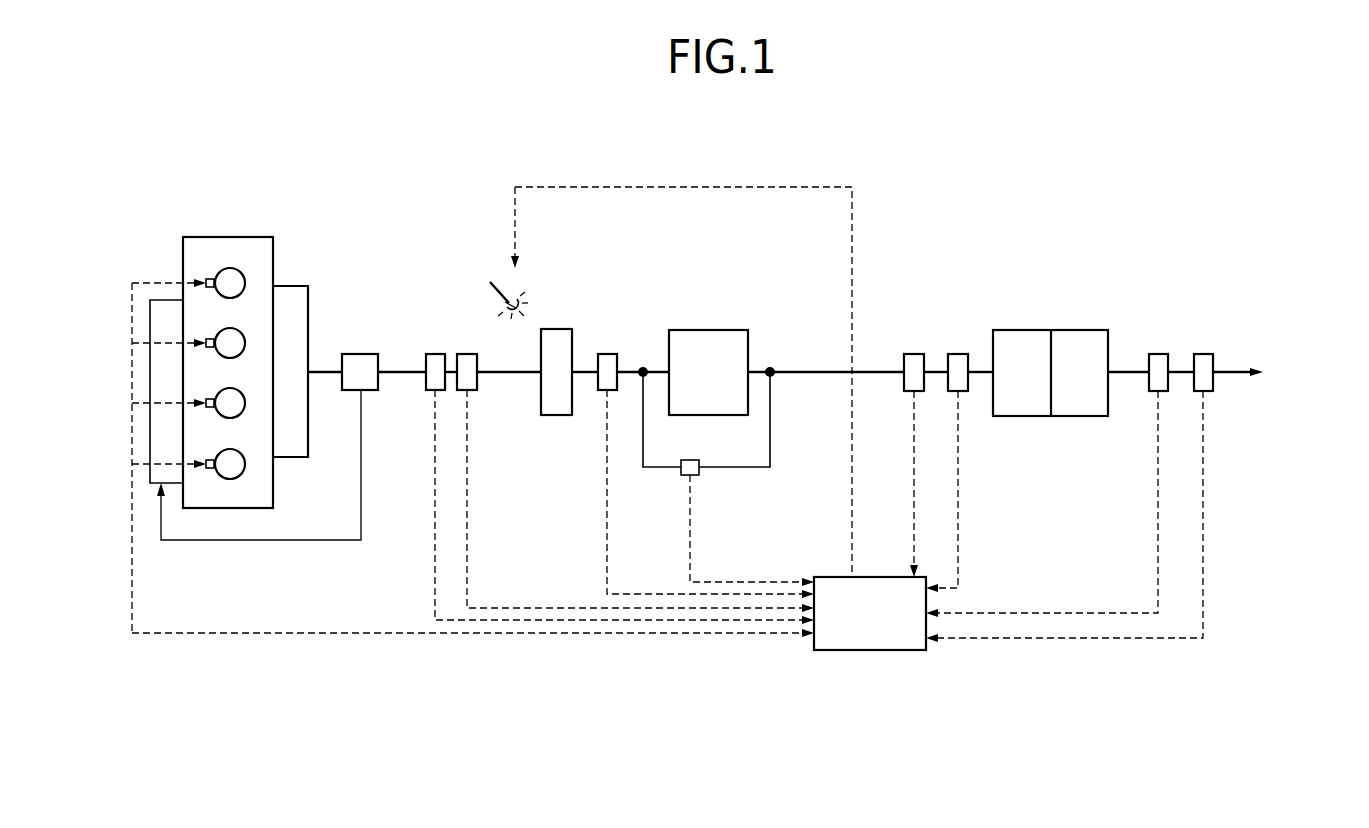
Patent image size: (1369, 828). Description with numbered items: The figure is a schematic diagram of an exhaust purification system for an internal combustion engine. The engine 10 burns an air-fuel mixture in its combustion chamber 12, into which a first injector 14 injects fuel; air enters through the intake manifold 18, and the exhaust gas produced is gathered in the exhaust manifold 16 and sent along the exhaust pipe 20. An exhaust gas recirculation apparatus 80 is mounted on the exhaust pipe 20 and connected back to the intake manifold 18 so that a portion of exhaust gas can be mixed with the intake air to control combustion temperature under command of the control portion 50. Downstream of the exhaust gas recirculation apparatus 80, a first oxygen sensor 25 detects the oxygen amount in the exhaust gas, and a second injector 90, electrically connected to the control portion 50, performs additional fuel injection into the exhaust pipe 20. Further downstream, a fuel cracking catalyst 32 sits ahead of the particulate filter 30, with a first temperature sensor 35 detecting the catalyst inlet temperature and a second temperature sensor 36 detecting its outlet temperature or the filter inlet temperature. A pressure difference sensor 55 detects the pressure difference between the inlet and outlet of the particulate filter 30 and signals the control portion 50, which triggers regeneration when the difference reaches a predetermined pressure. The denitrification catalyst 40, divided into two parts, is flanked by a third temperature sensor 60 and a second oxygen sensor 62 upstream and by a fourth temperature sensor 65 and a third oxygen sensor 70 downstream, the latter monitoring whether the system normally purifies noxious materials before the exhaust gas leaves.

The engine 10 is at (290, 205).
The combustion chamber 12 is at (235, 268).
The first injector 14 is at (208, 277).
The exhaust manifold 16 is at (298, 296).
The intake manifold 18 is at (149, 298).
The exhaust pipe 20 is at (393, 370).
The first oxygen sensor 25 is at (432, 352).
The particulate filter 30 is at (728, 282).
The fuel cracking catalyst 32 is at (557, 328).
The first temperature sensor 35 is at (466, 352).
The second temperature sensor 36 is at (608, 352).
The denitrification catalyst 40 is at (1072, 338).
The control portion 50 is at (887, 651).
The pressure difference sensor 55 is at (686, 472).
The third temperature sensor 60 is at (914, 353).
The second oxygen sensor 62 is at (958, 353).
The fourth temperature sensor 65 is at (1160, 352).
The third oxygen sensor 70 is at (1204, 352).
The exhaust gas recirculation apparatus 80 is at (358, 353).
The second injector 90 is at (490, 282).